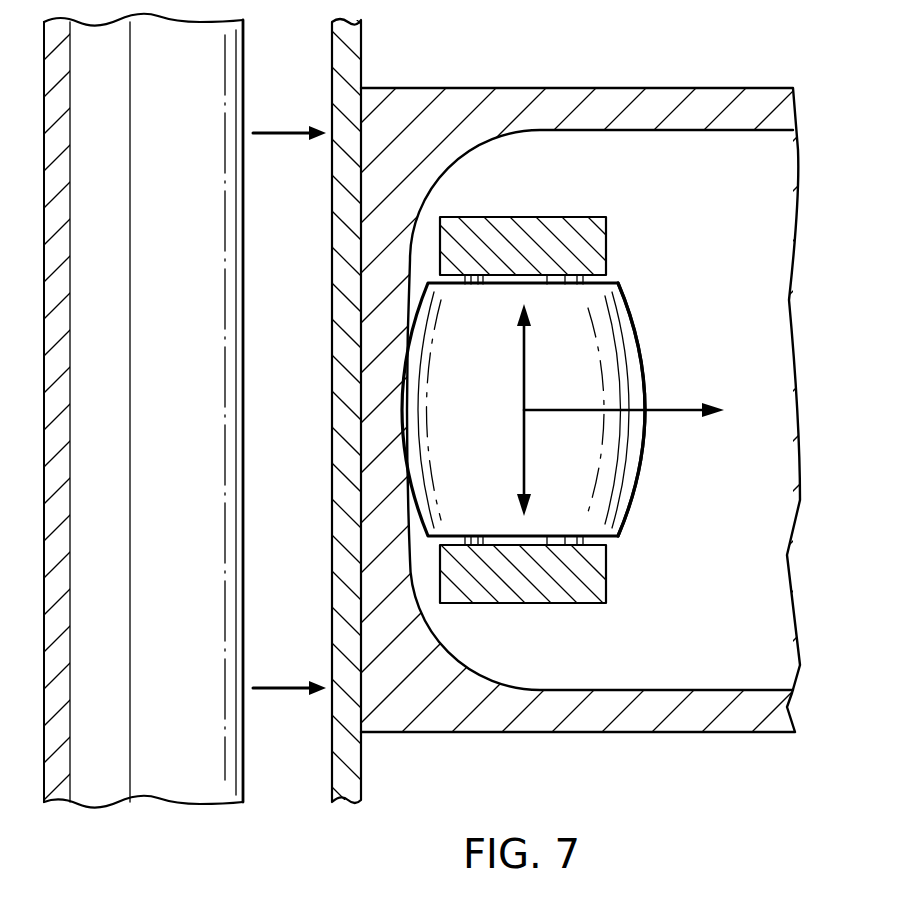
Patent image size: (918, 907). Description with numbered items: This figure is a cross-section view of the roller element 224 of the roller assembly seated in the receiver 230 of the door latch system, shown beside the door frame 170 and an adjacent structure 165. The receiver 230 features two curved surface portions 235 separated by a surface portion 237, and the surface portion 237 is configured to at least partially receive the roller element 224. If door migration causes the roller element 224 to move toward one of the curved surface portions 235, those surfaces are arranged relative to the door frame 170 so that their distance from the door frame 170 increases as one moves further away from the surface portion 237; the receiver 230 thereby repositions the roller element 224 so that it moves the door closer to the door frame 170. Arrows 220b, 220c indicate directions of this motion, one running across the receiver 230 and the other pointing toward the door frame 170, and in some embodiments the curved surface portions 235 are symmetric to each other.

The pipe / conduit 165 is at (243, 58).
The door frame 170 is at (362, 36).
The receiver 230 is at (668, 88).
The curved surface portions 235 is at (488, 153).
The surface portion 237 is at (400, 412).
The roller element 224 is at (640, 478).
The vertical axis / direction 220b is at (525, 380).
The horizontal axis / direction 220c is at (674, 409).